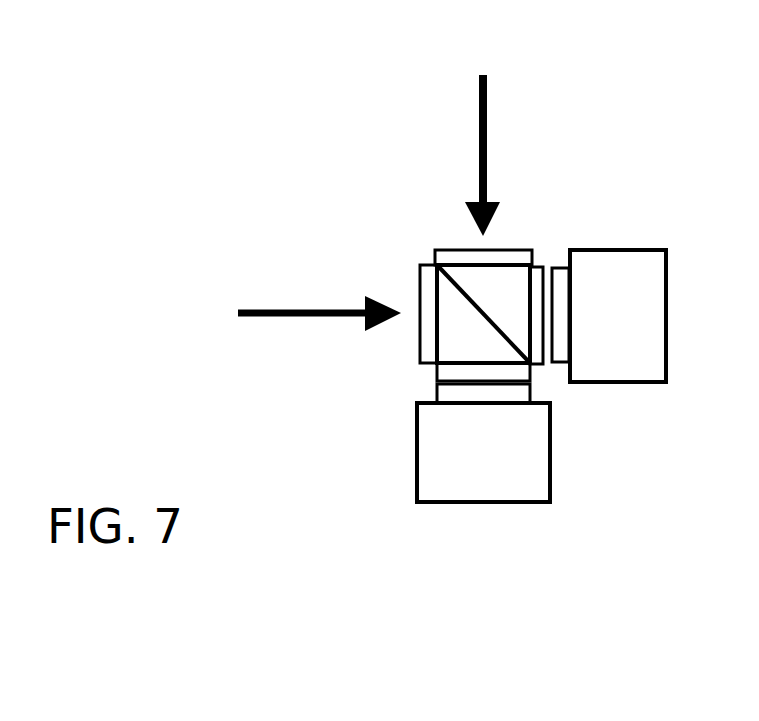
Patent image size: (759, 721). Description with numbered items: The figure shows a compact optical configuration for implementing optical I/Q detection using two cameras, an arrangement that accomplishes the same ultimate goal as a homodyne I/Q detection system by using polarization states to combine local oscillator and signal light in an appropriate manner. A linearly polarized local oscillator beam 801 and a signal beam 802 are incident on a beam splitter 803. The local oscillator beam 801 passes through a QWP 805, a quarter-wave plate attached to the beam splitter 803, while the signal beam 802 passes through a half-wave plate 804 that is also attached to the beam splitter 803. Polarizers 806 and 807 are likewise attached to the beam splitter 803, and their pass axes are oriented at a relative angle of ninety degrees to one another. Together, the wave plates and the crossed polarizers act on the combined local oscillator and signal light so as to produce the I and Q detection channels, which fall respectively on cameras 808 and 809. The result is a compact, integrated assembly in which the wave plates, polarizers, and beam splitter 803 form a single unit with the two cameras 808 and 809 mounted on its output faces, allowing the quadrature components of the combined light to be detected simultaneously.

The local oscillator beam 801 is at (262, 317).
The signal beam 802 is at (485, 125).
The beam splitter 803 is at (470, 281).
The half-wave plate 804 is at (515, 248).
The QWP 805 is at (420, 338).
The polarizer 806 is at (540, 363).
The polarizer 807 is at (433, 375).
The camera 808 is at (667, 283).
The camera 809 is at (447, 503).